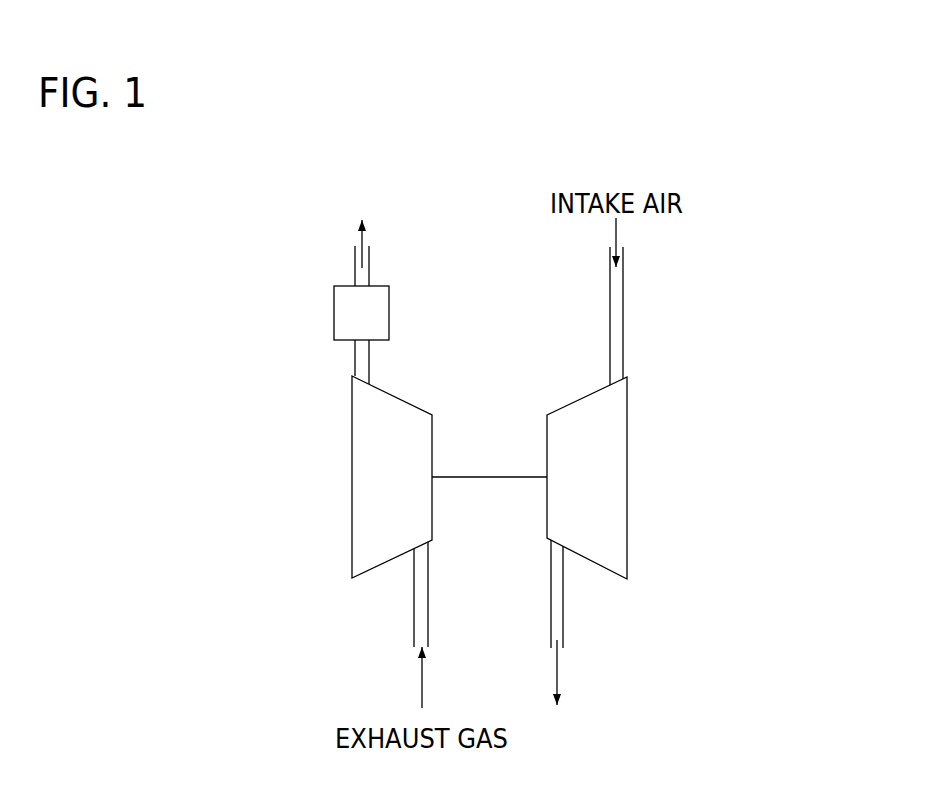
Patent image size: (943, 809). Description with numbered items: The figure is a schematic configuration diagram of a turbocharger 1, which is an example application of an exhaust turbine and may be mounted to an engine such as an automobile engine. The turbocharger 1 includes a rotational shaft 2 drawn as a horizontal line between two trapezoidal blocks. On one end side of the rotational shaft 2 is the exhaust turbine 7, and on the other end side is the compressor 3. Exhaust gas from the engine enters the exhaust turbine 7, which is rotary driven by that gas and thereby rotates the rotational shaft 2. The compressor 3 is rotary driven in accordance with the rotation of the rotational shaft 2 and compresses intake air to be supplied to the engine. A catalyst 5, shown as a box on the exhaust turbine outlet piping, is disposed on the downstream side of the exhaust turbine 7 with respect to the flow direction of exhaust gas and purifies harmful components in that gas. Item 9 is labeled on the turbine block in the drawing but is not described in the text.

The turbocharger 1 is at (697, 324).
The rotational shaft 2 is at (480, 477).
The compressor 3 is at (644, 474).
The catalyst 5 is at (347, 315).
The exhaust turbine 7 is at (336, 494).
The turbine 9 is at (363, 458).